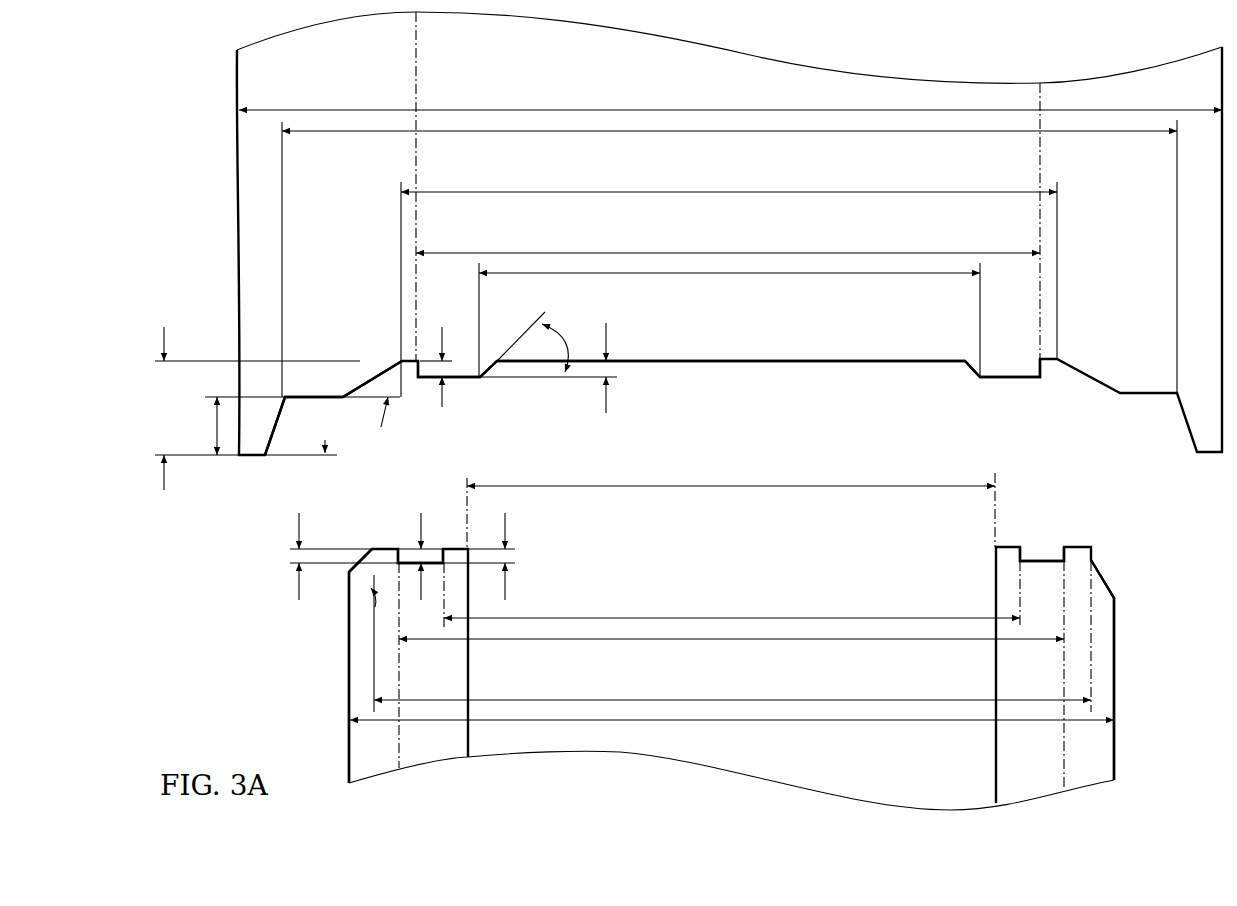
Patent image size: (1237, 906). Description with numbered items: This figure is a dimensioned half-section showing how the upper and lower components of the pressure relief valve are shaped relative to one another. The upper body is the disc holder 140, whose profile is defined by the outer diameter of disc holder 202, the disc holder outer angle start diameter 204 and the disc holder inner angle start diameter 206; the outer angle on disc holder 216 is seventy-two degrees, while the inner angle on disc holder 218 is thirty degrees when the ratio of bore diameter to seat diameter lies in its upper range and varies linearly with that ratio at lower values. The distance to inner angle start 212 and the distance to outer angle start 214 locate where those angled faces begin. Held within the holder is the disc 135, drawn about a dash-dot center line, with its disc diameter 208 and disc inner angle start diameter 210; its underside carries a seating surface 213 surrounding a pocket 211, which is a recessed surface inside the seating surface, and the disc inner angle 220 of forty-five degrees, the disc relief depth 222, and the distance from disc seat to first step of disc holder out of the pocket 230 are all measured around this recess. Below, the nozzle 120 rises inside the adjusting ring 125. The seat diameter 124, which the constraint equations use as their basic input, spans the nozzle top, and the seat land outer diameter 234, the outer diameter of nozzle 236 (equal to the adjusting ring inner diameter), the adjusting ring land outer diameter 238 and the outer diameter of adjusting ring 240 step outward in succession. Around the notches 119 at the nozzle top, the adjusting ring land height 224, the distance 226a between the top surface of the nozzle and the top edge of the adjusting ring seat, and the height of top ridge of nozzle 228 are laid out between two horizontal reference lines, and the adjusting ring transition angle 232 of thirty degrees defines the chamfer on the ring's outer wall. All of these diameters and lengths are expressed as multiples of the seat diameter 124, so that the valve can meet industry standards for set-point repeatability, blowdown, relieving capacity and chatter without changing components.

The first member body 140 is at (235, 80).
The disc 135 is at (1040, 170).
The outer diameter of disc holder 202 is at (602, 110).
The disc holder outer angle start diameter 204 is at (730, 131).
The disc holder inner angle start diameter 206 is at (605, 192).
The disc diameter 208 is at (853, 253).
The disc inner angle start diameter 210 is at (733, 277).
The distance to inner angle start 212 is at (167, 487).
The distance to outer angle start 214 is at (210, 420).
The outer angle on disc holder 216 is at (300, 400).
The inner angle on disc holder 218 is at (378, 364).
The seating surface 213 is at (466, 380).
The disc inner angle 220 is at (560, 342).
The disc relief depth 222 is at (606, 405).
The distance from disc seat to first step of disc holder out of the pocket 230 is at (442, 407).
The pocket 211 is at (823, 364).
The seat diameter 124 is at (730, 484).
The groove 119 is at (457, 544).
The nozzle 120 is at (430, 755).
The side wall 125 is at (348, 682).
The adjusting ring land height 224 is at (297, 590).
The distance between top surface of nozzle and top edge of adjusting ring seat 226a is at (420, 522).
The height of top ridge of nozzle 228 is at (508, 522).
The adjusting ring transition angle 232 is at (340, 578).
The seat land outer diameter 234 is at (730, 617).
The outer diameter of nozzle 236 is at (866, 641).
The adjusting ring land outer diameter 238 is at (600, 699).
The outer diameter of adjusting ring 240 is at (815, 721).